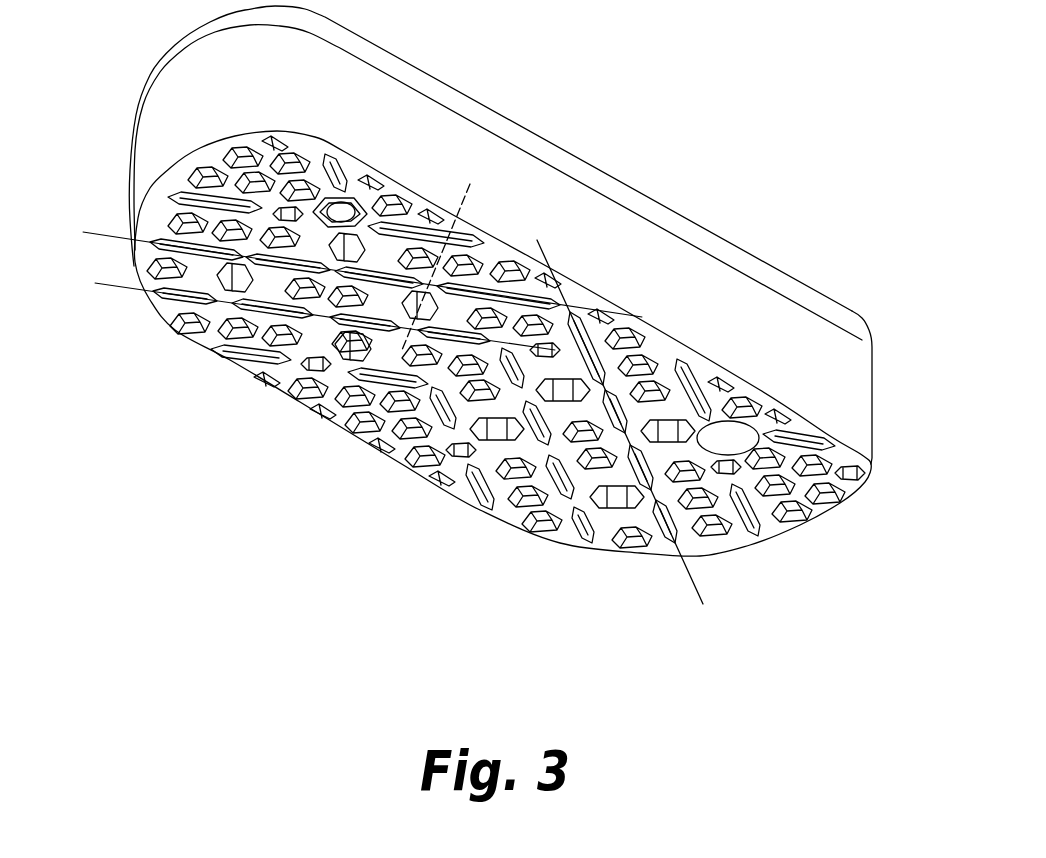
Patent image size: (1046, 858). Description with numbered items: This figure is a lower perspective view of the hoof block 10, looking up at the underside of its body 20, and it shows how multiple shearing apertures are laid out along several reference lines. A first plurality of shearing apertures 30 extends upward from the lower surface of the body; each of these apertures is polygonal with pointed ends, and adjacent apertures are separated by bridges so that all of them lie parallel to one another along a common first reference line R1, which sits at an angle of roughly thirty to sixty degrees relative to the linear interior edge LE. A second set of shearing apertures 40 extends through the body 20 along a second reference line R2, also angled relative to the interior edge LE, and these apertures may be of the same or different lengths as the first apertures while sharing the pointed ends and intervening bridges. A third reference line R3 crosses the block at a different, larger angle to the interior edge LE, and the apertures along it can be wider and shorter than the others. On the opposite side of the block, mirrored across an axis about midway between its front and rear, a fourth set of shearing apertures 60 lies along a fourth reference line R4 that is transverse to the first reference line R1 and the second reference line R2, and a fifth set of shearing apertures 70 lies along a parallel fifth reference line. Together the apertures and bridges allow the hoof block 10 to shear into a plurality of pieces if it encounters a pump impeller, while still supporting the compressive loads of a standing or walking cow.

The hoof block 10 is at (775, 194).
The body 20 is at (862, 331).
The first plurality of shearing apertures 30 is at (157, 240).
The second set of shearing apertures 40 is at (170, 307).
The fourth set of shearing apertures 60 is at (687, 540).
The fifth set of shearing apertures 70 is at (765, 522).
The linear interior edge LE is at (627, 250).
The first reference line R1 is at (108, 232).
The second reference line R2 is at (103, 287).
The third reference line R3 is at (456, 190).
The fourth reference line R4 is at (703, 604).